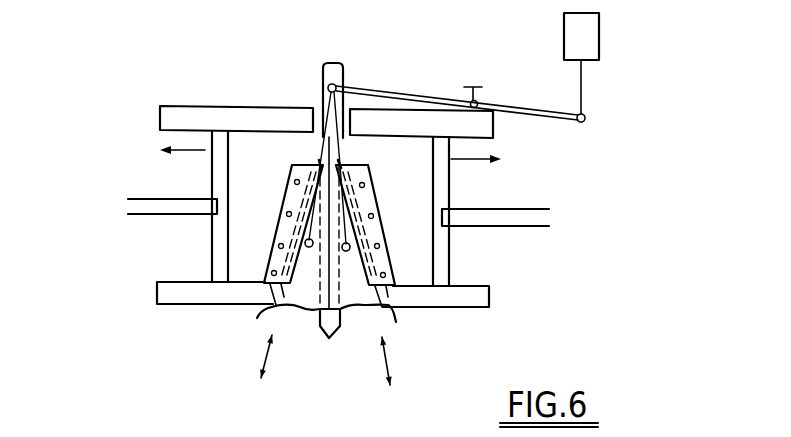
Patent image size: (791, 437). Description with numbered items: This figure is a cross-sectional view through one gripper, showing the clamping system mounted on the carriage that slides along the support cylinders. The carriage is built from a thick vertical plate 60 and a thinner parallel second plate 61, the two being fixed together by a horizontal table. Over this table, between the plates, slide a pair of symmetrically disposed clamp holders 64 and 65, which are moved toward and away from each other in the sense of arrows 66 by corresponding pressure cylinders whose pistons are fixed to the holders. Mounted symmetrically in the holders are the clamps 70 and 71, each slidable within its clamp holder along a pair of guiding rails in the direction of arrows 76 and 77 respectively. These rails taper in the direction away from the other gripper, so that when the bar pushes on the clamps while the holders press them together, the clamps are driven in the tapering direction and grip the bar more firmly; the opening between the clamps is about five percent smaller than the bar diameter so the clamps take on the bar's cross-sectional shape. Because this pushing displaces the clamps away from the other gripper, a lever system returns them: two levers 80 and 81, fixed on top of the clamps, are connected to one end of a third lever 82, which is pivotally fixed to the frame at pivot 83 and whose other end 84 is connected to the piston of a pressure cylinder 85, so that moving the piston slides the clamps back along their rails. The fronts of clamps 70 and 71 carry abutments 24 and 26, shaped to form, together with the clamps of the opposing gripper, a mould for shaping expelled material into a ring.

The abutment 24 is at (257, 318).
The abutment 26 is at (396, 322).
The thick vertical plate 60 is at (174, 106).
The second plate 61 is at (180, 297).
The clamp holder 64 is at (238, 236).
The clamp holder 65 is at (414, 258).
The arrows 66 is at (183, 151).
The clamp 70 is at (302, 294).
The clamp 71 is at (357, 294).
The arrow 76 is at (262, 358).
The arrow 77 is at (391, 372).
The lever 80 is at (307, 146).
The lever 81 is at (347, 138).
The third lever 82 is at (511, 108).
The pivot 83 is at (472, 103).
The other end of the third lever 84 is at (584, 119).
The pressure cylinder 85 is at (596, 45).